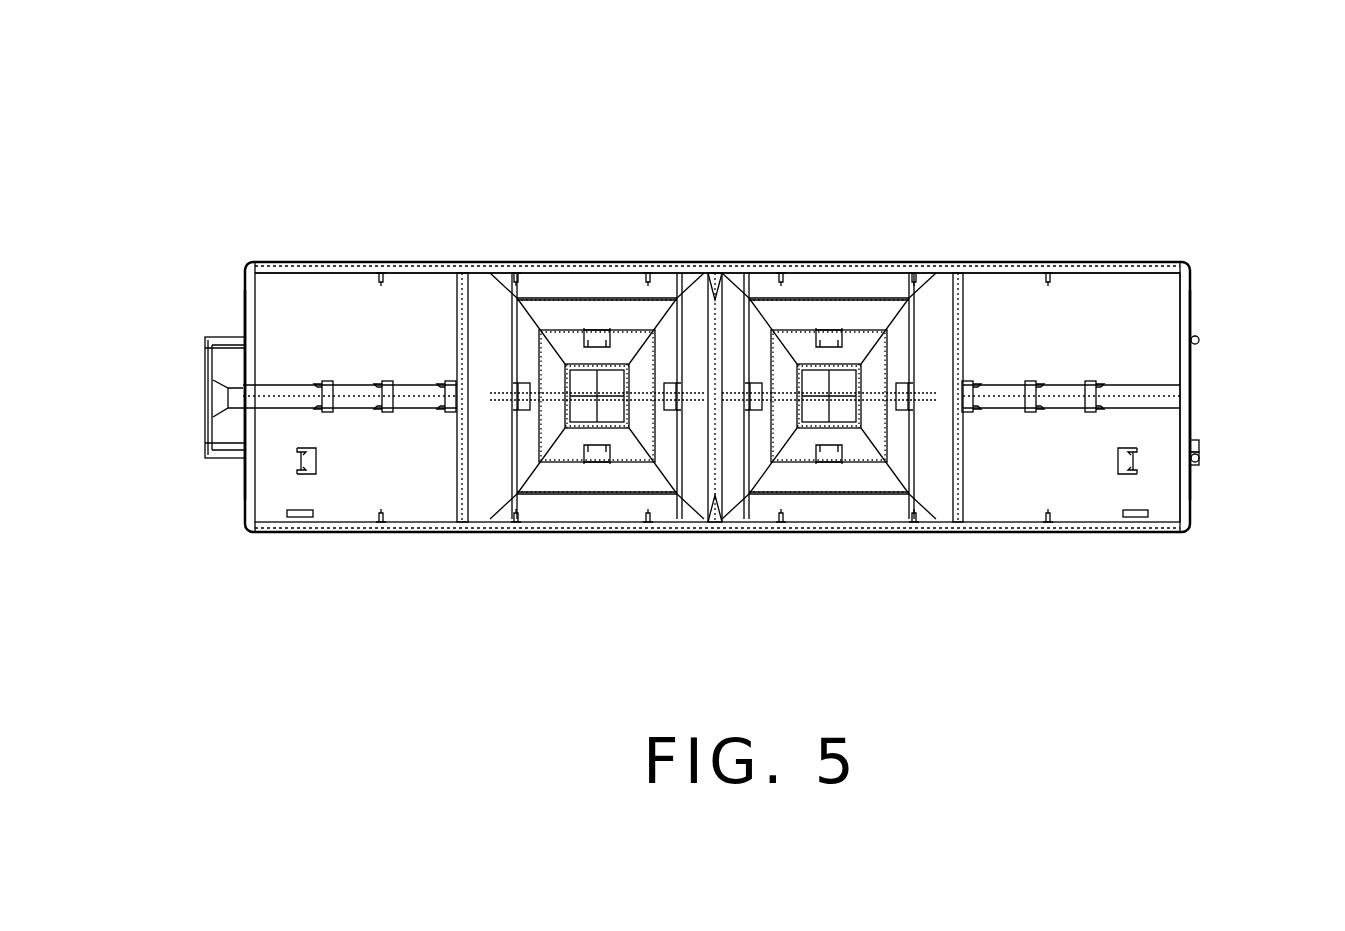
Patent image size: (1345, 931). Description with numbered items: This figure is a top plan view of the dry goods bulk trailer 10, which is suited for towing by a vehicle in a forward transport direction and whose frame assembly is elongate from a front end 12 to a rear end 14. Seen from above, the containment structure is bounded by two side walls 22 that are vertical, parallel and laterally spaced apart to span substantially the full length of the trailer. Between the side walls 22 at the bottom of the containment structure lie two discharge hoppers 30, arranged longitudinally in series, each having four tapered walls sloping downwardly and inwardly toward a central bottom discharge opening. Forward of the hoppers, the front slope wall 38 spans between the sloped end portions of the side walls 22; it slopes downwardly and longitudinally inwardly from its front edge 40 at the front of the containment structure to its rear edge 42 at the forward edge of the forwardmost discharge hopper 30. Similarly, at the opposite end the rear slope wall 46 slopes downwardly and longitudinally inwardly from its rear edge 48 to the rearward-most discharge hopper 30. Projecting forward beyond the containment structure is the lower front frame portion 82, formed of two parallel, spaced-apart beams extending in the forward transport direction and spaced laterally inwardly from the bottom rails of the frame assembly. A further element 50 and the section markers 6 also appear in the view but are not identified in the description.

The dry goods bulk trailer 10 is at (722, 98).
The front end 12 is at (233, 163).
The rear end 14 is at (1183, 165).
The side walls 22 is at (725, 260).
The discharge hoppers 30 is at (578, 470).
The front slope wall 38 is at (355, 472).
The front edge 40 is at (258, 297).
The rear edge 42 is at (452, 308).
The rear slope wall 46 is at (1088, 323).
The rear edge 48 is at (1178, 328).
The second divider wall 50 is at (965, 348).
The lower front frame portion 82 is at (218, 472).
The section line 6- 6 is at (135, 400).